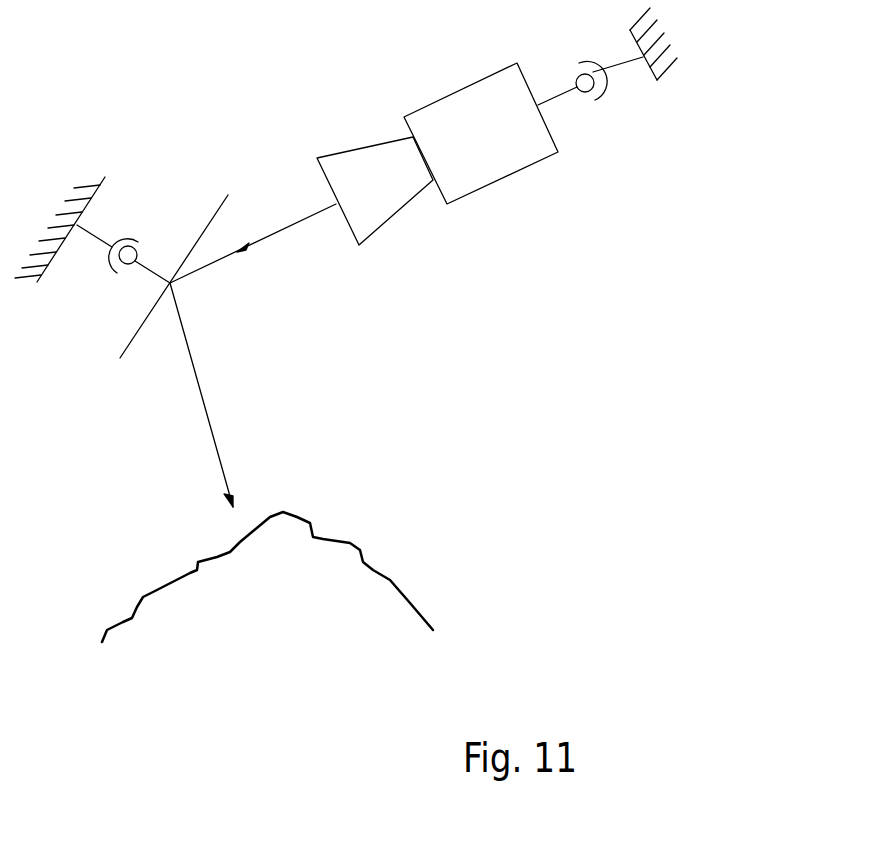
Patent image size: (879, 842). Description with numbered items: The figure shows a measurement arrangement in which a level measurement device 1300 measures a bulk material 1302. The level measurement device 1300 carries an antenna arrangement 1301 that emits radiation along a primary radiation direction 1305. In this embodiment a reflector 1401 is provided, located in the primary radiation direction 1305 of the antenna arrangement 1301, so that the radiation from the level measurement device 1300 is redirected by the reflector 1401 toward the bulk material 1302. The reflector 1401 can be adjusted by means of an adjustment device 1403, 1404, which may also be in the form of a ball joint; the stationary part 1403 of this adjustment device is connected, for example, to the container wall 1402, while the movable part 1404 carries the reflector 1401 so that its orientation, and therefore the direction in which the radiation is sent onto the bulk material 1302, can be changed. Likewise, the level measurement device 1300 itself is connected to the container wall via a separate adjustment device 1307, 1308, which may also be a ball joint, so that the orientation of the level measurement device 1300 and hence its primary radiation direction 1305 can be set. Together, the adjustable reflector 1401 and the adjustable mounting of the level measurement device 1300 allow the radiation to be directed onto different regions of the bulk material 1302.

The level measurement device 1300 is at (468, 97).
The antenna arrangement 1301 is at (385, 208).
The bulk material 1302 is at (387, 596).
The primary radiation direction 1305 is at (290, 228).
The adjustment device part 1307 is at (582, 93).
The adjustment device part 1308 is at (600, 91).
The reflector 1401 is at (133, 345).
The container wall 1402 is at (85, 183).
The stationary part of the adjustment device 1403 is at (123, 237).
The adjustment device 1404 is at (128, 268).